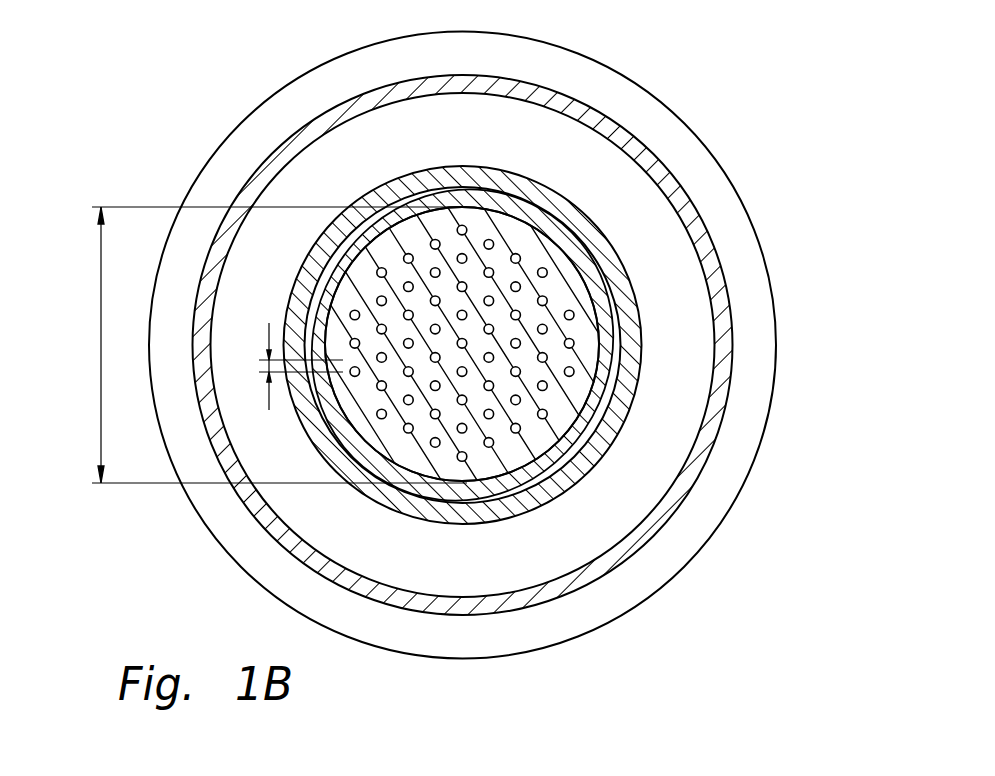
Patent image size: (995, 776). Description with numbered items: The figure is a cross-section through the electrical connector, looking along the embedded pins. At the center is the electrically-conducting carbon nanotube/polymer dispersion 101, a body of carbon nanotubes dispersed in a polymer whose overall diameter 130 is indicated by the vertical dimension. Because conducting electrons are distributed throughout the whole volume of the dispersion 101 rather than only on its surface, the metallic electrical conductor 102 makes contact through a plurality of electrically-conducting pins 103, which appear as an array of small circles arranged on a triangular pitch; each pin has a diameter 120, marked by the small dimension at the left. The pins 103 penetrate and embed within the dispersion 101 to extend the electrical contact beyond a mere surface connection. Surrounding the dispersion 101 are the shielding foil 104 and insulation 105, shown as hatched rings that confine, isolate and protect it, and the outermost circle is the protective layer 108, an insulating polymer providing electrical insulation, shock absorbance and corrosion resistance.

The electrically-conducting carbon nanotube/polymer dispersion 101 is at (533, 243).
The metallic electrical conductor 102 is at (655, 240).
The electrically-conducting pins 103 is at (578, 336).
The shielding foil 104 is at (605, 378).
The insulation 105 is at (600, 445).
The protective layer 108 is at (718, 532).
The diameter 120 is at (263, 361).
The diameter 130 is at (101, 347).